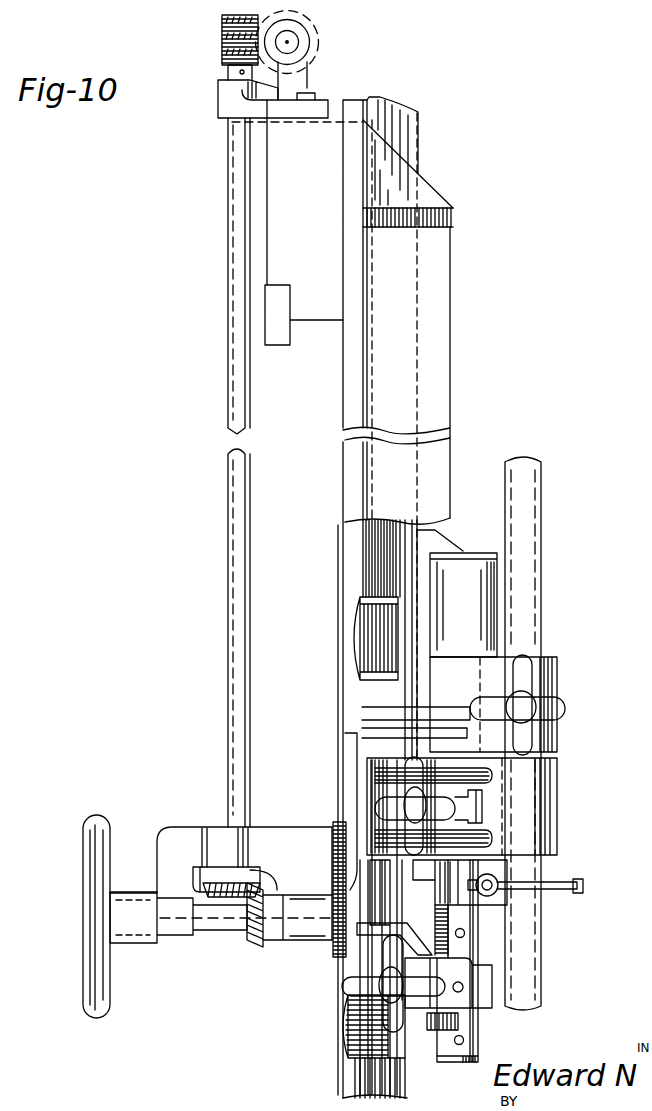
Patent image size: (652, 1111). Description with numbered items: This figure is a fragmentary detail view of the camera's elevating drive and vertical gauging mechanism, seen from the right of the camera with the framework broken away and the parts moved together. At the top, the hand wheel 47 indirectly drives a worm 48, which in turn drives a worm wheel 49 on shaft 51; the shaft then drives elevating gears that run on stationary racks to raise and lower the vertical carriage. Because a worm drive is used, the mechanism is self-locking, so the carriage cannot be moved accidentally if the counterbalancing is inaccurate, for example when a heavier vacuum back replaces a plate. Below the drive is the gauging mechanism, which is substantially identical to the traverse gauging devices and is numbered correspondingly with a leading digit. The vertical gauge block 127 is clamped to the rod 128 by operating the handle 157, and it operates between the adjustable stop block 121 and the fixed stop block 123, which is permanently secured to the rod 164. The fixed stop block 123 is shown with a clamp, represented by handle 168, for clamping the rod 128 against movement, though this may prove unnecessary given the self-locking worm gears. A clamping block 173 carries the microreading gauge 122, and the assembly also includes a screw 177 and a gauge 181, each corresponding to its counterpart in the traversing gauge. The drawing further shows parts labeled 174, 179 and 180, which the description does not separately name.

The hand wheel 47 is at (108, 991).
The worm 48 is at (222, 43).
The worm wheel 49 is at (318, 47).
The shaft 51 is at (298, 37).
The adjustable stop block 121 is at (507, 898).
The microreading gauge 122 is at (346, 1045).
The fixed stop block 123 is at (557, 740).
The vertical gauge block 127 is at (552, 781).
The rod 128 is at (540, 584).
The handle 157 is at (383, 804).
The rod 164 is at (462, 1063).
The handle 168 is at (565, 708).
The clamping block 173 is at (487, 1010).
The clamp block 174 is at (465, 987).
The screw 177 is at (455, 947).
The ring knob 179 is at (558, 878).
The clamp knob 180 is at (342, 986).
The gauge 181 is at (378, 625).